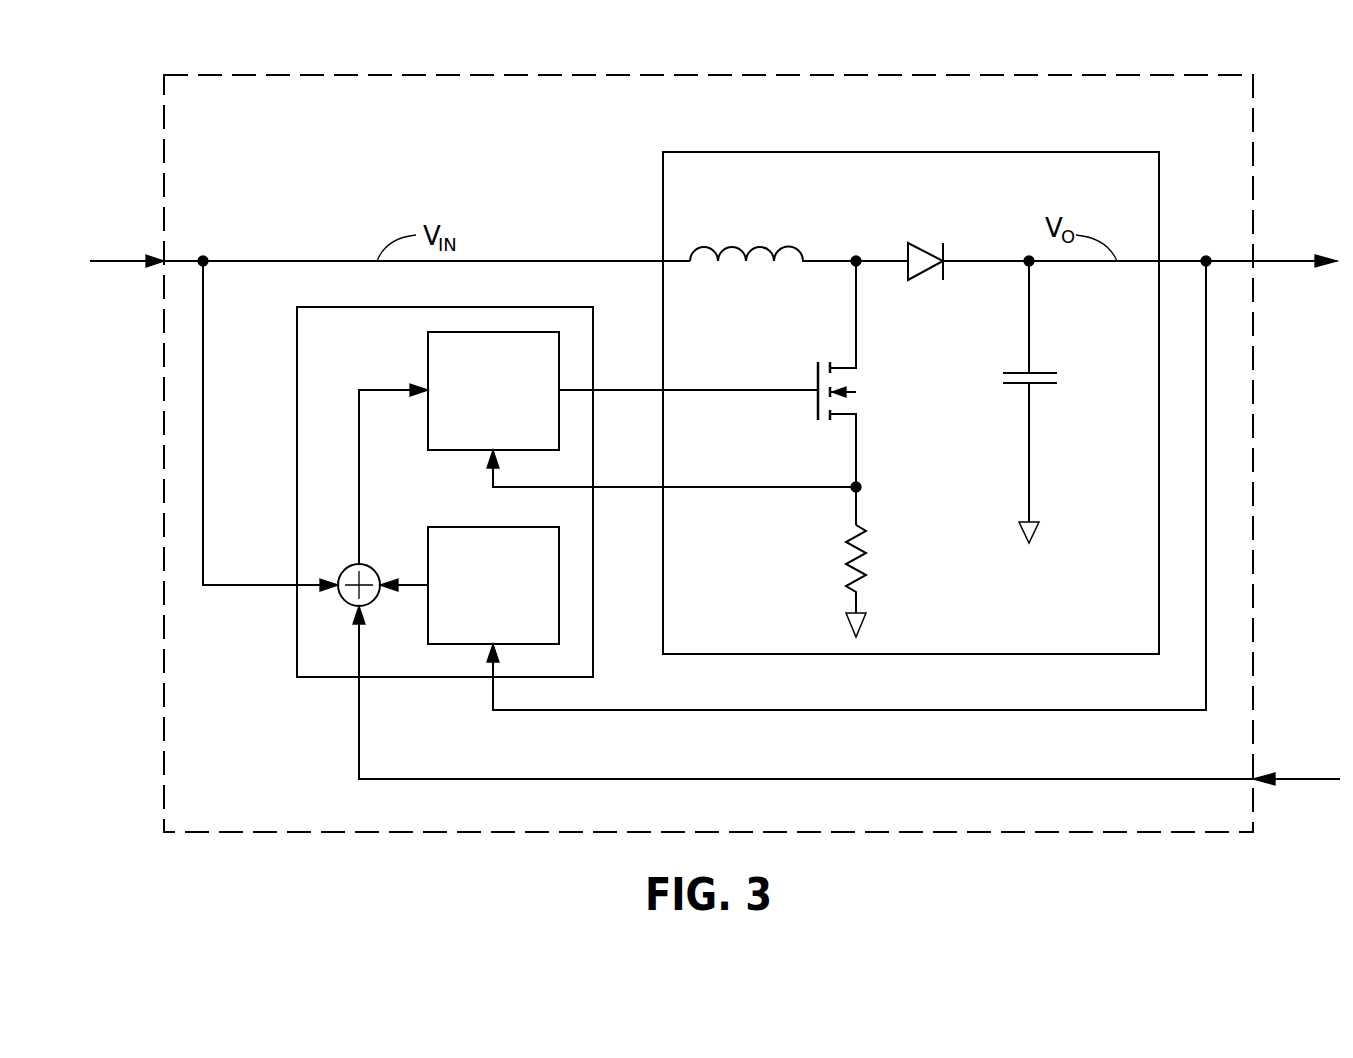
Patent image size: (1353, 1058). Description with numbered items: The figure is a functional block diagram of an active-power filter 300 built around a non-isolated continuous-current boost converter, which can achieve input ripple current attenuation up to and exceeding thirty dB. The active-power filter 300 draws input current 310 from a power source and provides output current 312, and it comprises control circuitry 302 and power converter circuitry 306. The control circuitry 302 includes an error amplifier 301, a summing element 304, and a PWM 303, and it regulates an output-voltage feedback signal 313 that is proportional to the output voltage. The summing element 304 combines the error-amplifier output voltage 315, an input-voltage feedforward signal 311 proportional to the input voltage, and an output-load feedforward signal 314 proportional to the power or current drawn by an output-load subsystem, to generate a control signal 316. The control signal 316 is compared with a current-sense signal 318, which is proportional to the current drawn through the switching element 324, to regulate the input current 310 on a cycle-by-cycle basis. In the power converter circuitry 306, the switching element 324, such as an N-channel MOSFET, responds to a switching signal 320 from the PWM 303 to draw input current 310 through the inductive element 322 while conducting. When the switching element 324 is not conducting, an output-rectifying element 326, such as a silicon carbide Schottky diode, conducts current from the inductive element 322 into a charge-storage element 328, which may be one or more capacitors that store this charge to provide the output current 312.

The active-power filter 300 is at (752, 73).
The error amplifier 301 is at (472, 526).
The control circuitry 302 is at (445, 306).
The PWM 303 is at (427, 360).
The summing element 304 is at (376, 572).
The power converter circuitry 306 is at (912, 150).
The input current 310 is at (115, 258).
The input-voltage feedforward signal 311 is at (250, 587).
The output current 312 is at (1283, 258).
The output-voltage feedback signal 313 is at (853, 712).
The output-load feedforward signal 314 is at (826, 781).
The error-amplifier output voltage 315 is at (410, 591).
The control signal 316 is at (359, 480).
The current-sense signal 318 is at (625, 485).
The switching signal 320 is at (625, 388).
The inductive element 322 is at (798, 237).
The switching element 324 is at (816, 369).
The output-rectifying element 326 is at (926, 277).
The charge-storage element 328 is at (1057, 384).